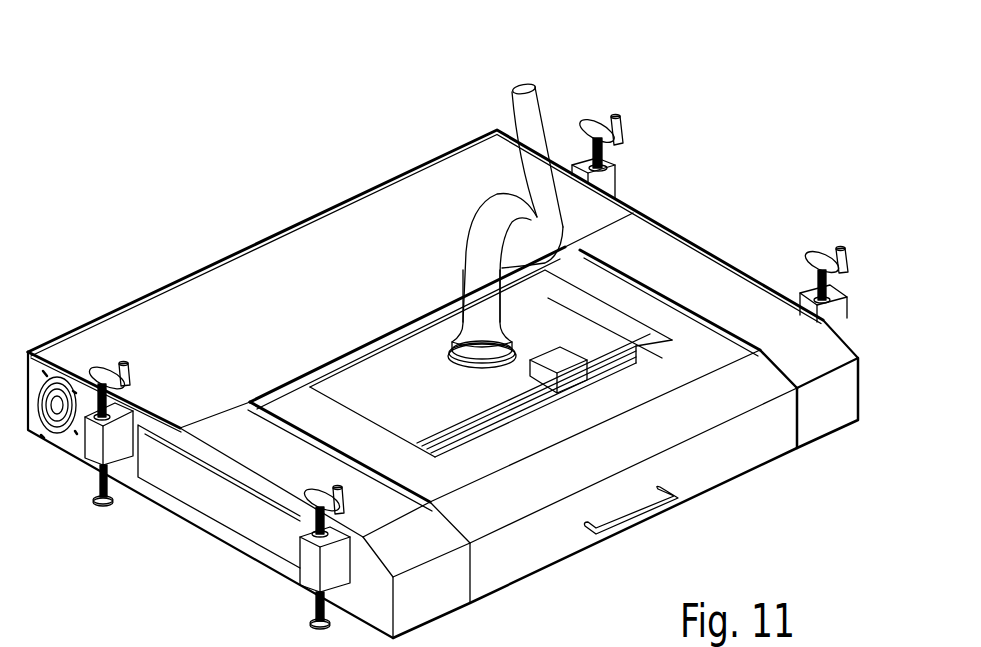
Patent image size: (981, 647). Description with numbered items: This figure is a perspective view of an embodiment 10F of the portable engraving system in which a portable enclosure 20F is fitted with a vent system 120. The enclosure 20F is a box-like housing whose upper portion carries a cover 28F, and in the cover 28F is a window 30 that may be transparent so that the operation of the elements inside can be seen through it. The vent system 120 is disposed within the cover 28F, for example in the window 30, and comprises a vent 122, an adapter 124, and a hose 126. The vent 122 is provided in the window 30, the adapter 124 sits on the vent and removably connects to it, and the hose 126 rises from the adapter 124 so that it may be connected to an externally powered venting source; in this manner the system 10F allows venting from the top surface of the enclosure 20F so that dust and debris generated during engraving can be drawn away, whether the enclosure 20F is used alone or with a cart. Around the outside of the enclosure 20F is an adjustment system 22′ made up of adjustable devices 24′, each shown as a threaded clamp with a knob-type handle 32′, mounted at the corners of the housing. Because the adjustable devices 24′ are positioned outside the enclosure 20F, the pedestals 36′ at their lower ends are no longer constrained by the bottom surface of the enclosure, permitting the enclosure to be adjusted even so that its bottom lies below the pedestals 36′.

The portable engraving system embodiment 10F is at (405, 166).
The portable enclosure 20F is at (206, 263).
The adjustment system 22′ is at (871, 290).
The adjustable devices 24′ is at (100, 364).
The cover 28F is at (663, 322).
The window 30 is at (620, 367).
The clamp handle knob 32′ is at (850, 256).
The pedestals 36′ is at (318, 627).
The vent system 120 is at (541, 87).
The vent 122 is at (511, 348).
The adapter 124 is at (455, 334).
The hose 126 is at (468, 238).